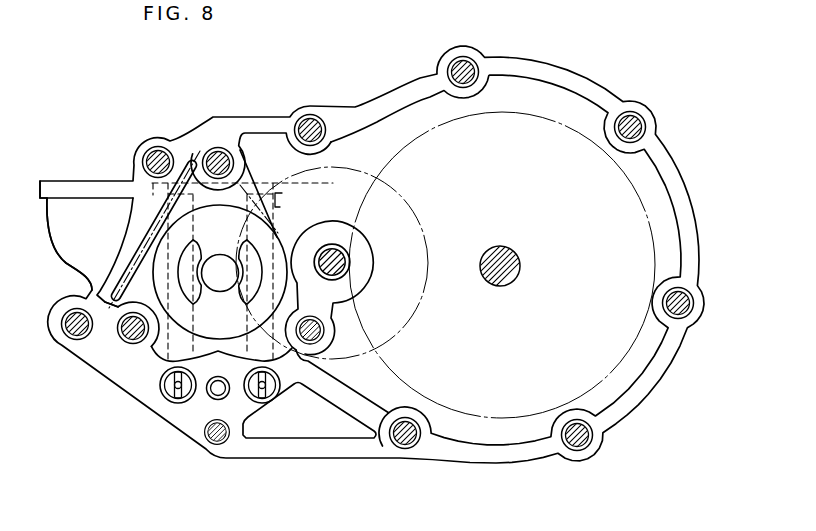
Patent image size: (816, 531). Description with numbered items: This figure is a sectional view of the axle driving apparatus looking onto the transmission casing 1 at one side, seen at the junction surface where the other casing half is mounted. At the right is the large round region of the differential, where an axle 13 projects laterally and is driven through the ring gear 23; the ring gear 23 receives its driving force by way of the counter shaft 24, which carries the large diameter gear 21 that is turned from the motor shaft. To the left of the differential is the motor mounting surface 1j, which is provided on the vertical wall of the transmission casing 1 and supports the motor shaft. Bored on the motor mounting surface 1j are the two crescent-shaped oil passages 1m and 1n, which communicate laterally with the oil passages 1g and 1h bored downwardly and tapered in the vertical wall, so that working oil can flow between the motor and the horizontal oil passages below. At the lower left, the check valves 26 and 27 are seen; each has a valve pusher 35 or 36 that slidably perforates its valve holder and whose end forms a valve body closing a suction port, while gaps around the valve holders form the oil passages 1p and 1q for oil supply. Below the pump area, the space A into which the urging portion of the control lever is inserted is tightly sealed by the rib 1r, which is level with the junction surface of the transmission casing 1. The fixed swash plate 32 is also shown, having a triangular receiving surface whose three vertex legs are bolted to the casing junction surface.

The transmission casing 1 is at (389, 92).
The large diameter gear 21 is at (350, 167).
The ring gear 23 is at (551, 112).
The counter shaft 24 is at (348, 257).
The axle 13 is at (515, 281).
The oil passage 1h is at (280, 206).
The oil passage 1g is at (172, 256).
The motor mounting surface 1j is at (223, 240).
The crescent-shaped oil passage 1m is at (174, 270).
The crescent-shaped oil passage 1n is at (249, 294).
The oil passage 1p is at (161, 389).
The oil passage 1q is at (250, 401).
The rib 1r is at (346, 391).
The fixed swash plate 32 is at (117, 350).
The check valve 26 is at (168, 401).
The check valve 27 is at (275, 399).
The valve pusher 35 is at (180, 403).
The valve pusher 36 is at (263, 403).
The space A is at (337, 426).